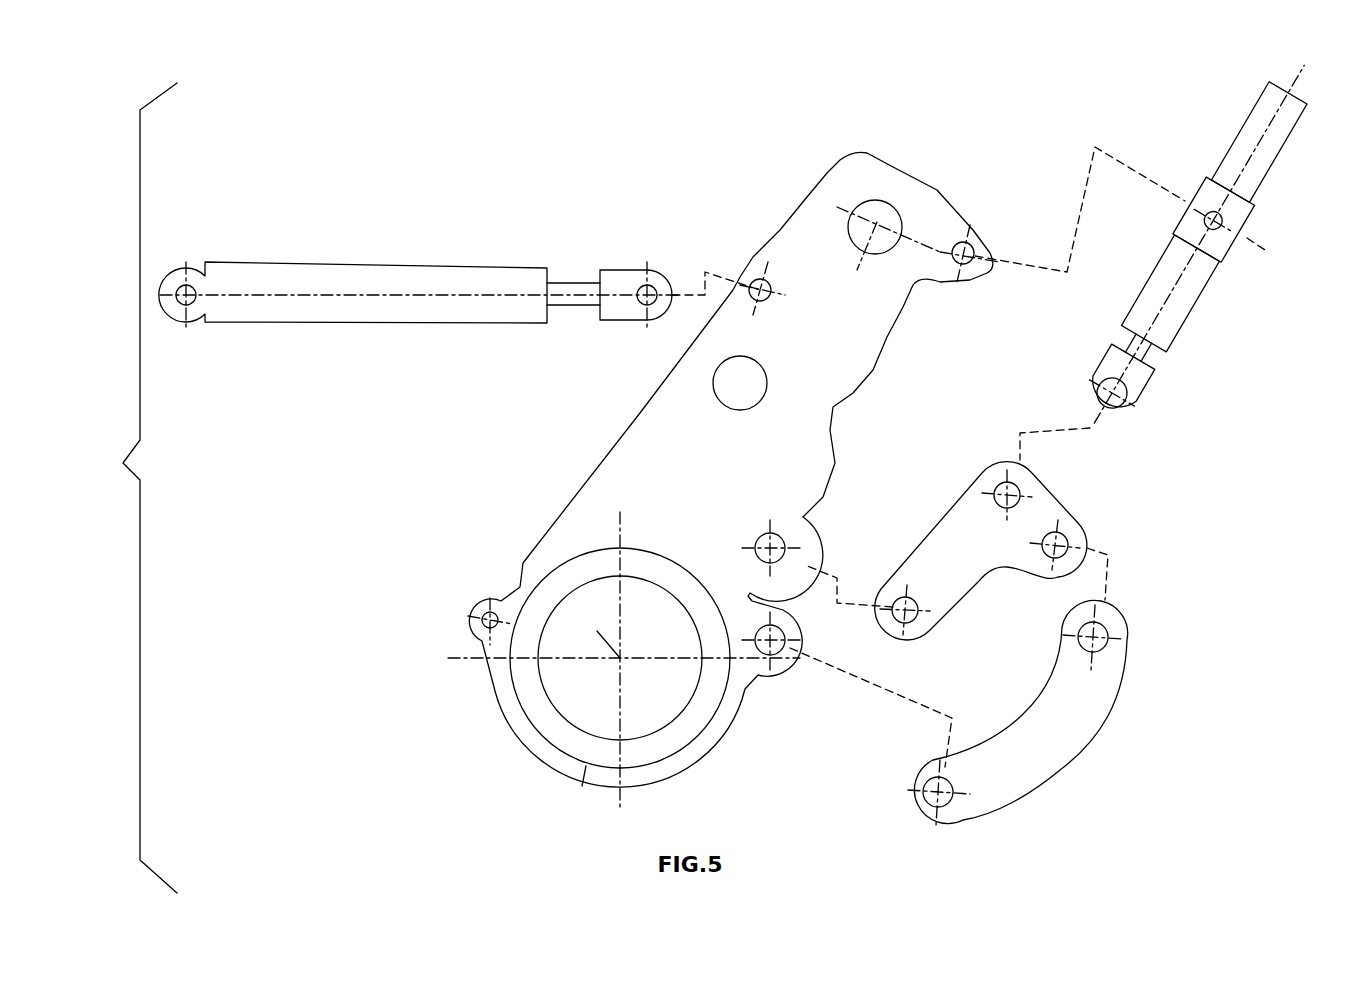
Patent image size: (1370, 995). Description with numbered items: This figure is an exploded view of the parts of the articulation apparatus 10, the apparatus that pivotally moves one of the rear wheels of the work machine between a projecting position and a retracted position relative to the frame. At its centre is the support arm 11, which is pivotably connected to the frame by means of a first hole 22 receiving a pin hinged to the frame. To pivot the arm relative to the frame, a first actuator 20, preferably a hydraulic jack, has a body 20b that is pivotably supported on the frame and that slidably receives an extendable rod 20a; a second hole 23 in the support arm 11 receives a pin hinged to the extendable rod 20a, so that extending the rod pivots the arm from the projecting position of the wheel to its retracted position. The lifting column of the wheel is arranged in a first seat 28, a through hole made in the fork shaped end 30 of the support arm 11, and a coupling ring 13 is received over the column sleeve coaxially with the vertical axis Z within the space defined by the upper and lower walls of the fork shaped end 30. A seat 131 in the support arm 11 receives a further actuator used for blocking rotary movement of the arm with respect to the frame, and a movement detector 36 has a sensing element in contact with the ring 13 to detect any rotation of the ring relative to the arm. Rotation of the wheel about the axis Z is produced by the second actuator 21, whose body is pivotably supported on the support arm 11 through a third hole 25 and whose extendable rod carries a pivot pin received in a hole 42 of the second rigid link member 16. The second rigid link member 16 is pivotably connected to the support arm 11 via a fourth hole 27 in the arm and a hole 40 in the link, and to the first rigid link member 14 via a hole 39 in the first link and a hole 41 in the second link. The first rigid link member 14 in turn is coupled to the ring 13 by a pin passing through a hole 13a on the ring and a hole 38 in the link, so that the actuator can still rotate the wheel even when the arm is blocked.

The articulation apparatus 10 is at (123, 463).
The support arm 11 is at (647, 443).
The coupling member (ring) 13 is at (693, 722).
The hole 13a is at (772, 655).
The seat 131 is at (717, 403).
The first rigid link member 14 is at (1078, 737).
The second rigid link member 16 is at (1045, 510).
The first actuator 20 is at (419, 240).
The extendable rod 20a is at (588, 283).
The body 20b is at (457, 275).
The second actuator 21 is at (1215, 243).
The first hole 22 is at (877, 222).
The second hole 23 is at (757, 280).
The third hole 25 is at (968, 245).
The fourth hole 27 is at (790, 528).
The first seat 28 is at (586, 768).
The fork shaped portion (end) 30 is at (586, 675).
The movement detector 36 is at (455, 598).
The hole 38 is at (946, 800).
The hole 39 is at (1100, 645).
The hole 40 is at (915, 620).
The hole 41 is at (1068, 540).
The hole 42 is at (1005, 482).